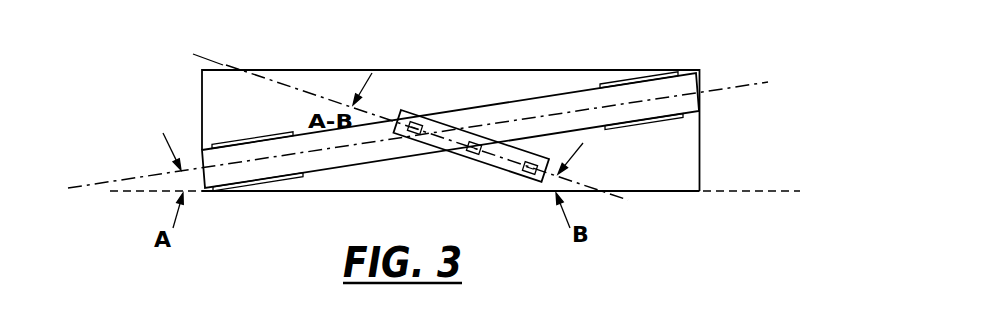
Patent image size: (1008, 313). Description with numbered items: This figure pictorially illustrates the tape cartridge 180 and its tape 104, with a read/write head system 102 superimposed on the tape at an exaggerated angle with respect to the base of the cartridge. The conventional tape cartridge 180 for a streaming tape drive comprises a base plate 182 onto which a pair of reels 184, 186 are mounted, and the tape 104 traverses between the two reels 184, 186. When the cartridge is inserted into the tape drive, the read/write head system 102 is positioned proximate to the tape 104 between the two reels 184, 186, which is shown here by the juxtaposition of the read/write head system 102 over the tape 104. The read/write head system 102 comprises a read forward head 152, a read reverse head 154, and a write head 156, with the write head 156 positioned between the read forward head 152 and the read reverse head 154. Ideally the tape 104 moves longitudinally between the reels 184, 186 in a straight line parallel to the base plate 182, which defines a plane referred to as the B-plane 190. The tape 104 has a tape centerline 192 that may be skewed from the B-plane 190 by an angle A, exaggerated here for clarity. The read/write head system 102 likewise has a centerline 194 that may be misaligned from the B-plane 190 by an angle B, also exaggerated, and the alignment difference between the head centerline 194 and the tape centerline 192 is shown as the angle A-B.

The read/write head system 102 is at (500, 178).
The tape 104 is at (463, 108).
The read forward head 152 is at (421, 121).
The read reverse head 154 is at (531, 176).
The write head 156 is at (475, 158).
The tape cartridge 180 is at (297, 69).
The base plate 182 is at (297, 189).
The reel 184 is at (262, 140).
The reel 186 is at (640, 126).
The B-plane 190 is at (730, 190).
The tape centerline 192 is at (733, 83).
The centerline 194 is at (220, 63).